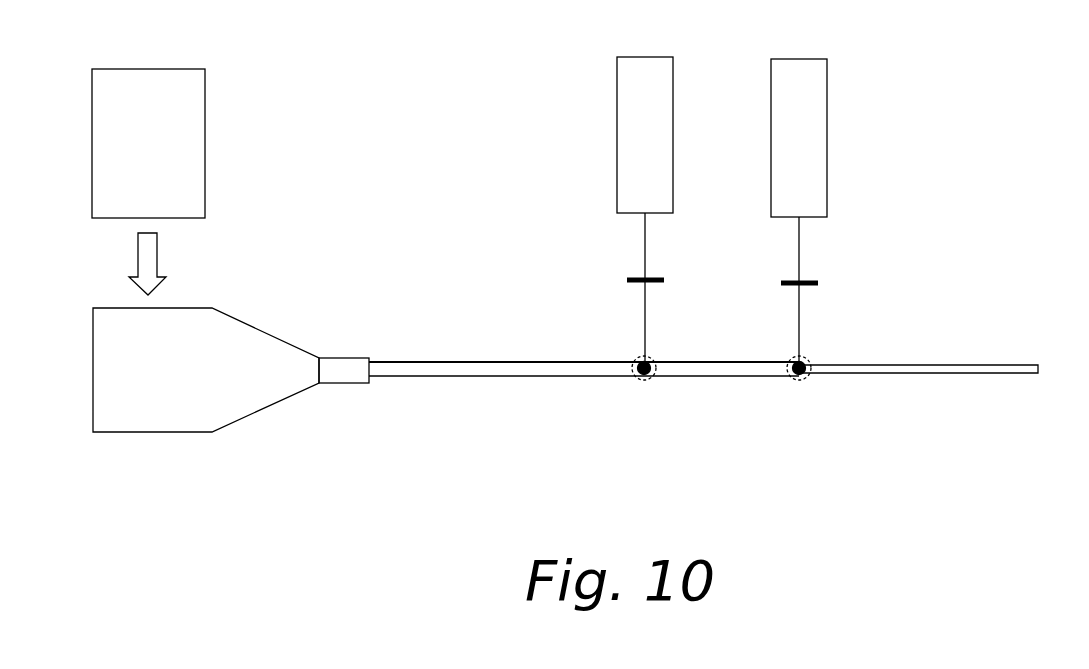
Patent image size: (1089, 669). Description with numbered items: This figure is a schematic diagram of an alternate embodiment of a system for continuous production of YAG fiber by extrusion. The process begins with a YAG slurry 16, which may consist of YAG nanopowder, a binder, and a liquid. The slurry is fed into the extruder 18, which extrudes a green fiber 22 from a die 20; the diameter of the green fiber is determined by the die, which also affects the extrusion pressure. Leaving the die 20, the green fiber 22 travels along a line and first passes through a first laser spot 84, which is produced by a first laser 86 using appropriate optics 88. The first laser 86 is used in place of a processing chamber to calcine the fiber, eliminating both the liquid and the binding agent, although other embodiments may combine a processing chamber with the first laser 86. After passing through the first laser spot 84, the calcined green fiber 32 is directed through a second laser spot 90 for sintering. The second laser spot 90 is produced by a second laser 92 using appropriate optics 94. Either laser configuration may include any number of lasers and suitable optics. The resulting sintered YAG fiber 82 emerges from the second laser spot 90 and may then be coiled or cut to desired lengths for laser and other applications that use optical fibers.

The YAG slurry 16 is at (205, 152).
The extruder 18 is at (191, 433).
The die 20 is at (343, 357).
The green fiber 22 is at (450, 372).
The green fiber 32 is at (743, 372).
The sintered YAG fiber 82 is at (1030, 365).
The first laser spot 84 is at (648, 357).
The first laser 86 is at (617, 70).
The optics 88 is at (628, 282).
The second laser spot 90 is at (803, 357).
The second laser 92 is at (771, 70).
The optics 94 is at (782, 283).